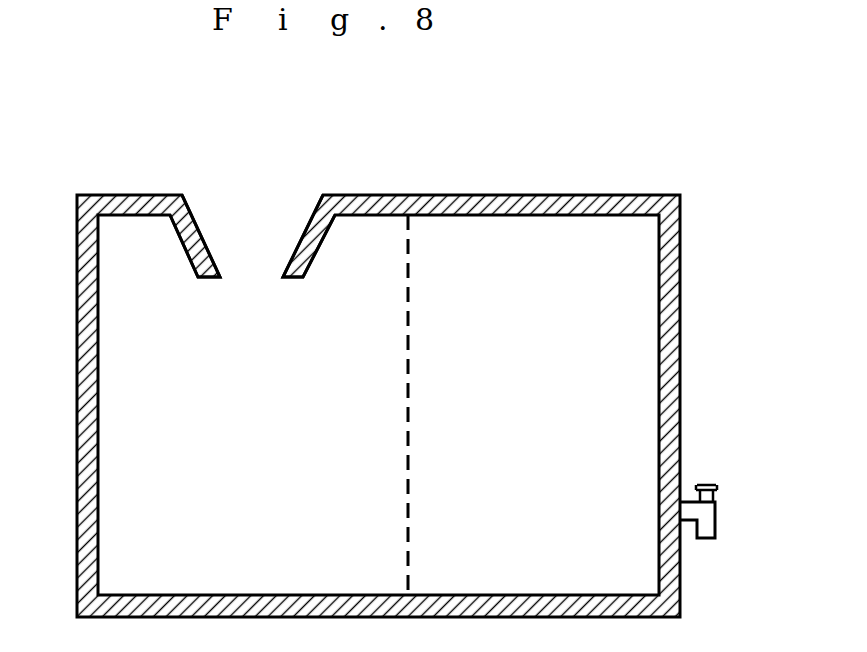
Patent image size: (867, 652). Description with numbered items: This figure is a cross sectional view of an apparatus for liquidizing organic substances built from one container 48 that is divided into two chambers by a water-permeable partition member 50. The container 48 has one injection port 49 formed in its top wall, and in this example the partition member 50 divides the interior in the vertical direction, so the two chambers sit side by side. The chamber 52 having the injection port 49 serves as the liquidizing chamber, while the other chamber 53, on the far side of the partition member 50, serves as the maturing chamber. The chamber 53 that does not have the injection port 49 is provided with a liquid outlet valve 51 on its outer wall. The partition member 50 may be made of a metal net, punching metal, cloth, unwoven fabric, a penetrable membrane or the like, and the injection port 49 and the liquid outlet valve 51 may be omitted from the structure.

The container 48 is at (82, 370).
The injection port 49 is at (272, 218).
The water-permeable partition member 50 is at (411, 382).
The liquid outlet valve 51 is at (707, 512).
The chamber having the injection port 52 is at (265, 470).
The another chamber 53 is at (560, 470).